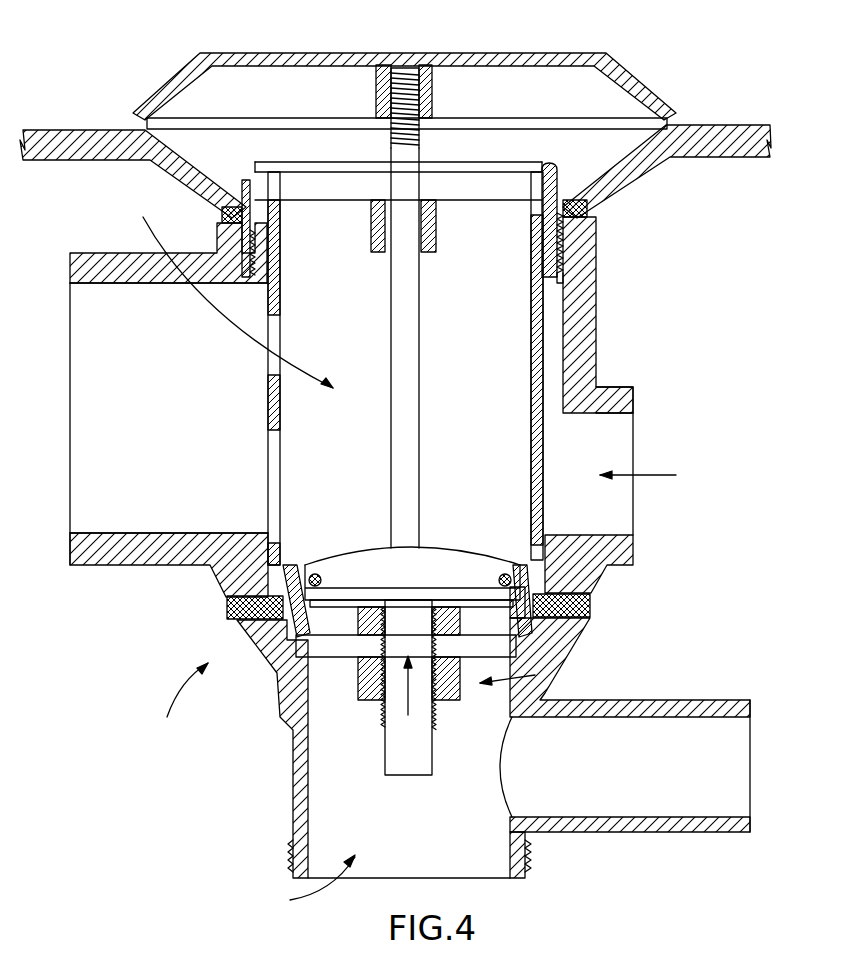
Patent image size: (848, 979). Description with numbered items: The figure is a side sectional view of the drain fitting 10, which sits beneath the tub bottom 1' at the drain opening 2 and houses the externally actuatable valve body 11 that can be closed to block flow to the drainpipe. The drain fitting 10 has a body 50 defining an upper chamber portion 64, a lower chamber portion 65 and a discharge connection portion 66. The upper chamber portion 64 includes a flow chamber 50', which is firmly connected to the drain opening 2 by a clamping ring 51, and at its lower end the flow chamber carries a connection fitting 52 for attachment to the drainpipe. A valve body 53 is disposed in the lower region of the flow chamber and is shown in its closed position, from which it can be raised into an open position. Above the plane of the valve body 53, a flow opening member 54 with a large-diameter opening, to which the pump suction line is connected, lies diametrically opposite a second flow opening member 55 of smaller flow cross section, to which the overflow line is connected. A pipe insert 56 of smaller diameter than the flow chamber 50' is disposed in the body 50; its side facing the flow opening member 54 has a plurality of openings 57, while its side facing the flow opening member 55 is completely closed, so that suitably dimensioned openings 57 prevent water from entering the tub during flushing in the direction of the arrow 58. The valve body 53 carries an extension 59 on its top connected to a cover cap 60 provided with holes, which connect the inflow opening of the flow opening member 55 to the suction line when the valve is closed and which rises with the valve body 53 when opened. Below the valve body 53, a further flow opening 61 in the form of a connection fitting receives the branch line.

The tub bottom 1' is at (395, 146).
The drain opening 2 is at (471, 142).
The drain fitting 10 is at (179, 706).
The valve body 11 is at (322, 446).
The body 50 is at (363, 398).
The flow chamber 50' is at (610, 266).
The clamping ring 51 is at (263, 175).
The connection fitting 52 is at (297, 831).
The valve body 53 is at (345, 580).
The flow opening member 54 is at (122, 553).
The second flow opening member 55 is at (619, 393).
The pipe insert 56 is at (536, 311).
The openings 57 is at (273, 352).
The arrow 58 is at (656, 474).
The extension 59 is at (413, 477).
The cover cap 60 is at (311, 53).
The further flow opening 61 is at (615, 803).
The upper chamber portion 64 is at (227, 291).
The lower chamber portion 65 is at (535, 675).
The discharge connection portion 66 is at (290, 900).